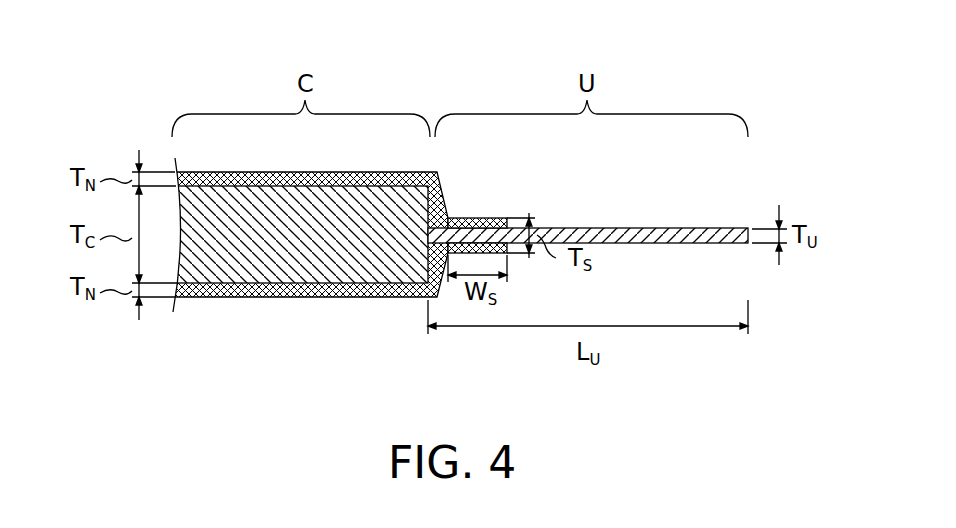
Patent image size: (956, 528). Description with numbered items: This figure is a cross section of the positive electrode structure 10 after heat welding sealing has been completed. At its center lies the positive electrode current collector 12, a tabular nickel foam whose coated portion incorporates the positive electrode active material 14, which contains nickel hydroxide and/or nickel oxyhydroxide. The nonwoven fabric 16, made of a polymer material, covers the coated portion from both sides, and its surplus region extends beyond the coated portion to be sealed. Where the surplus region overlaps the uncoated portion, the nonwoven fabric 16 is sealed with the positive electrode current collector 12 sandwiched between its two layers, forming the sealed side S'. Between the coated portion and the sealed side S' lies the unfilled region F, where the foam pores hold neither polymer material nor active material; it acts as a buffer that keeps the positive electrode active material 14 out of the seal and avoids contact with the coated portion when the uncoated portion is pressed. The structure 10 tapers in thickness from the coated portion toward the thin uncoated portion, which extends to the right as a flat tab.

The positive electrode structure 10 is at (495, 206).
The positive electrode current collector 12 is at (294, 277).
The positive electrode active material 14 is at (256, 273).
The nonwoven fabric 16 is at (396, 172).
The unfilled region F is at (440, 230).
The sealed side S' is at (493, 201).